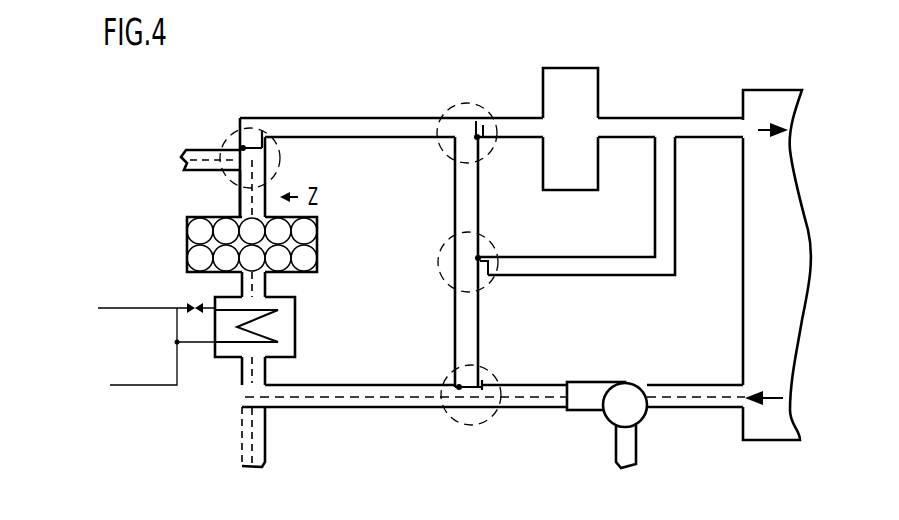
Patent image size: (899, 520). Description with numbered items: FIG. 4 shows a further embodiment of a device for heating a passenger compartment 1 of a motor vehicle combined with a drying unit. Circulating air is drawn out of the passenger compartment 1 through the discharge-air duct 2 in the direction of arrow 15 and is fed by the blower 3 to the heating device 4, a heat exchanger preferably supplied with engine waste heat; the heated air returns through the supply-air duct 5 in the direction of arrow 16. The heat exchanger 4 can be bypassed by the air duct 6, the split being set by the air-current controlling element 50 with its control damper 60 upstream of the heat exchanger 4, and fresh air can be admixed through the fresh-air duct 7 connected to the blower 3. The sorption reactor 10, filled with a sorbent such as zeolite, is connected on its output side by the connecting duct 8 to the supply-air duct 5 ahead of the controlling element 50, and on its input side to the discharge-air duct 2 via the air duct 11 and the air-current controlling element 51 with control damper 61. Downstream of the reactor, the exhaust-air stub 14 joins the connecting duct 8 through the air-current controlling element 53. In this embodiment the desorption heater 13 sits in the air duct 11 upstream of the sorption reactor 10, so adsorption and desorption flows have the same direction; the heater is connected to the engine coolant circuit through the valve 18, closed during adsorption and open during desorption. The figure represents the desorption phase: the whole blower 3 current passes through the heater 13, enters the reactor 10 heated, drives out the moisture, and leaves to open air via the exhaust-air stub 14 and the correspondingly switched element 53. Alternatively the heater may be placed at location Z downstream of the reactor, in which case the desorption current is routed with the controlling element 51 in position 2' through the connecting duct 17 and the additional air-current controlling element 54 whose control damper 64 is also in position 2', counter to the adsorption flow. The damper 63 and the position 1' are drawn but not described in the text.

The passenger compartment 1 is at (513, 265).
The discharge-air duct 2 is at (493, 379).
The blower 3 is at (618, 392).
The heating device 4 is at (596, 180).
The supply-air duct 5 is at (670, 126).
The air duct 6 is at (597, 276).
The fresh-air duct 7 is at (637, 449).
The connecting duct 8 is at (375, 128).
The sorption reactor 10 is at (317, 246).
The air duct 11 is at (277, 380).
The desorption heater 13 is at (295, 324).
The exhaust-air stub 14 is at (208, 150).
The arrow 15 is at (778, 393).
The arrow 16 is at (758, 135).
The connecting duct 17 is at (455, 323).
The valve 18 is at (186, 304).
The air-current controlling element 50 is at (498, 248).
The air-current controlling element 51 is at (492, 425).
The air-current controlling element 53 is at (280, 175).
The air-current controlling element 54 is at (456, 106).
The control damper 60 is at (488, 281).
The control damper 61 is at (470, 421).
The connector 63 is at (253, 134).
The control damper 64 is at (483, 150).
The connection designation 1' is at (501, 368).
The position 2' is at (395, 260).